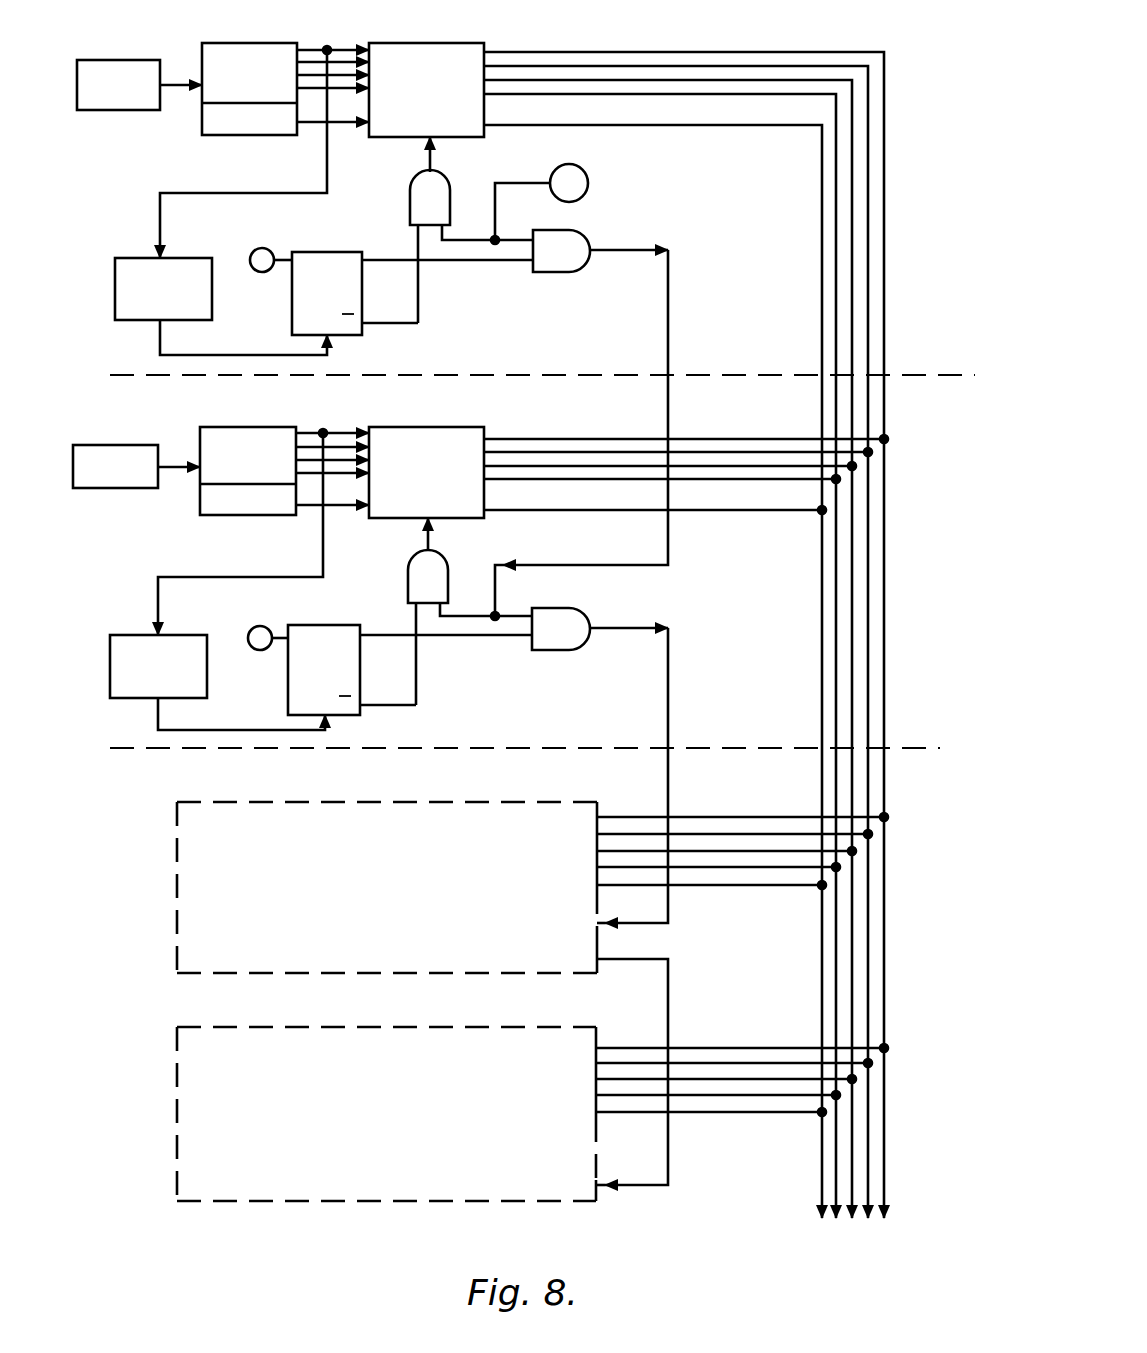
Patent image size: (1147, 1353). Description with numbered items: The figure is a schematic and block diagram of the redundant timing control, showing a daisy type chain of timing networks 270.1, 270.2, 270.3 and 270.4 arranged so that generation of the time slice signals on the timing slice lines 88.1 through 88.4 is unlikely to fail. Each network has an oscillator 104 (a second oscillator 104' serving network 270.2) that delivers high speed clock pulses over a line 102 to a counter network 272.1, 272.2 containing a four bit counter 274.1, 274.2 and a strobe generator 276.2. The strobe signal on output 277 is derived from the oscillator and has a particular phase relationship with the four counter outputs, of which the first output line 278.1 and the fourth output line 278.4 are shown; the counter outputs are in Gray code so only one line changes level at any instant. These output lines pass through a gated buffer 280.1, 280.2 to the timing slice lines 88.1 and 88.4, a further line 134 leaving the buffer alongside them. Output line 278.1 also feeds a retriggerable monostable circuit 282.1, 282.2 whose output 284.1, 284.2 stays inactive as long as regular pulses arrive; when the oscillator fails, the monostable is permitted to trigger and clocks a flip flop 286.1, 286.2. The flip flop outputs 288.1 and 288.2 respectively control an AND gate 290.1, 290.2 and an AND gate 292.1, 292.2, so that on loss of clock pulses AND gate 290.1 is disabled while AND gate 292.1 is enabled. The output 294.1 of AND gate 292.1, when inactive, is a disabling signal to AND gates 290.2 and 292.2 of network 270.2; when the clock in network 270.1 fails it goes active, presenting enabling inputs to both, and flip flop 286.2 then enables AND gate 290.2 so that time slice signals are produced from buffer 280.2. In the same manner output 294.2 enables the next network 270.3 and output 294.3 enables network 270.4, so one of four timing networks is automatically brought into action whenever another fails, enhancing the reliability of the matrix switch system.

The oscillator 104 is at (118, 60).
The oscillator 104' is at (115, 451).
The timing network 270.1 is at (148, 177).
The timing network 270.2 is at (143, 562).
The timing network 270.3 is at (340, 802).
The timing network 270.4 is at (295, 1027).
The counter network 272.1 is at (285, 28).
The counter network 272.2 is at (296, 402).
The four bit counter 274.1 is at (202, 48).
The four bit counter 274.2 is at (200, 432).
The strobe generator 276.2 is at (200, 487).
The strobe output 277 is at (307, 126).
The counter output line 278.1 is at (308, 50).
The counter output line 278.4 is at (345, 92).
The gated buffer 280.1 is at (445, 43).
The gated buffer 280.2 is at (470, 427).
The retriggerable monostable circuit 282.1 is at (135, 258).
The retriggerable monostable circuit 282.2 is at (110, 640).
The monostable output 284.1 is at (158, 345).
The monostable output 284.2 is at (158, 720).
The flip flop 286.1 is at (355, 228).
The flip flop 286.2 is at (345, 625).
The flip flop output 288.1 is at (465, 262).
The flip flop output 288.2 is at (420, 322).
The AND gate 290.1 is at (449, 175).
The AND gate 290.2 is at (450, 556).
The AND gate 292.1 is at (595, 236).
The AND gate 292.2 is at (588, 610).
The AND gate output 294.1 is at (670, 322).
The AND gate output 294.2 is at (670, 672).
The AND gate output 294.3 is at (670, 990).
The clock line 102 is at (684, 614).
The timing slice line 88.1 is at (788, 52).
The timing slice line 88.4 is at (728, 96).
The strobe bus line 134 is at (668, 127).